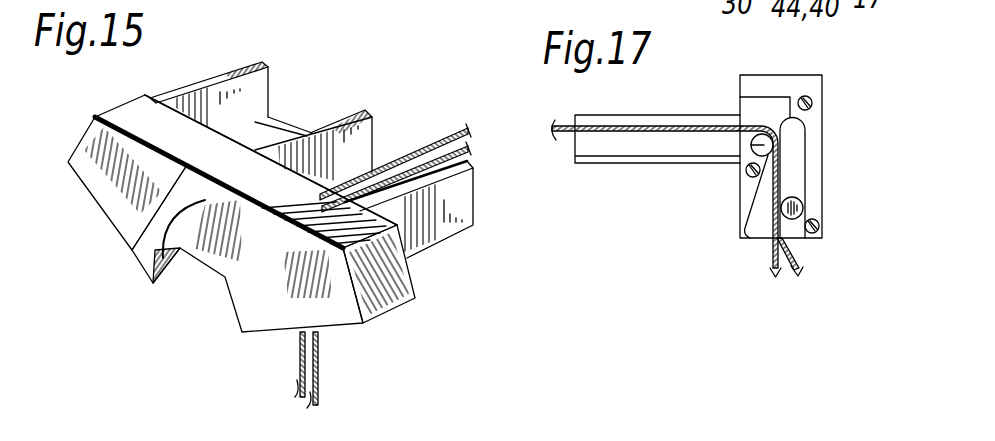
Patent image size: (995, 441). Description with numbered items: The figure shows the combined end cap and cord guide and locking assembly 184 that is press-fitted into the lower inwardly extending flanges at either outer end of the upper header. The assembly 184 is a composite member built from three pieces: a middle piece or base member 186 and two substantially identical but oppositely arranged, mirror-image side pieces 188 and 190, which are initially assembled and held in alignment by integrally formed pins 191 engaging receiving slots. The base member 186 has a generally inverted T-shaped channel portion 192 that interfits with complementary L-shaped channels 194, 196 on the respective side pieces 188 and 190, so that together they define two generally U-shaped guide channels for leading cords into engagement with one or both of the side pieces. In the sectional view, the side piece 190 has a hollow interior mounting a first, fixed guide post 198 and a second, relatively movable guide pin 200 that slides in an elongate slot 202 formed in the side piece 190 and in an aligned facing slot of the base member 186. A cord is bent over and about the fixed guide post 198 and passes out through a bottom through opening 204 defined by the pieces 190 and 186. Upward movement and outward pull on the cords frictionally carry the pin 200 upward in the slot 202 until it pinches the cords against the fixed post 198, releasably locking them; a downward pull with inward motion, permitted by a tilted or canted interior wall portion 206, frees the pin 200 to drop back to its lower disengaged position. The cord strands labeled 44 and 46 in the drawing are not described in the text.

In FIG. 15, the tape strip 44 is at (470, 150).
In FIG. 17, the tape strip 44 is at (670, 97).
In FIG. 15, the tape strip 46 is at (438, 140).
In FIG. 17, the tape strip 46 is at (769, 247).
In FIG. 15, the combined end cap and cord guide and locking assembly 184 is at (120, 106).
In FIG. 15, the middle piece or base member 186 is at (140, 268).
In FIG. 15, the side piece 188 is at (88, 160).
In FIG. 15, the side piece 190 is at (335, 288).
In FIG. 17, the side piece 190 is at (808, 42).
In FIG. 17, the pins 191 is at (813, 101).
In FIG. 15, the inverted T-shaped channel portion 192 is at (372, 113).
In FIG. 15, the L-shaped channel 194 is at (466, 223).
In FIG. 17, the L-shaped channel 194 is at (612, 146).
In FIG. 15, the L-shaped channel 196 is at (263, 80).
In FIG. 17, the fixed guide post 198 is at (750, 152).
In FIG. 17, the movable guide pin 200 is at (801, 206).
In FIG. 17, the elongate slot 202 is at (806, 147).
In FIG. 17, the bottom through opening 204 is at (752, 238).
In FIG. 17, the tilted or canted interior wall portion 206 is at (748, 236).